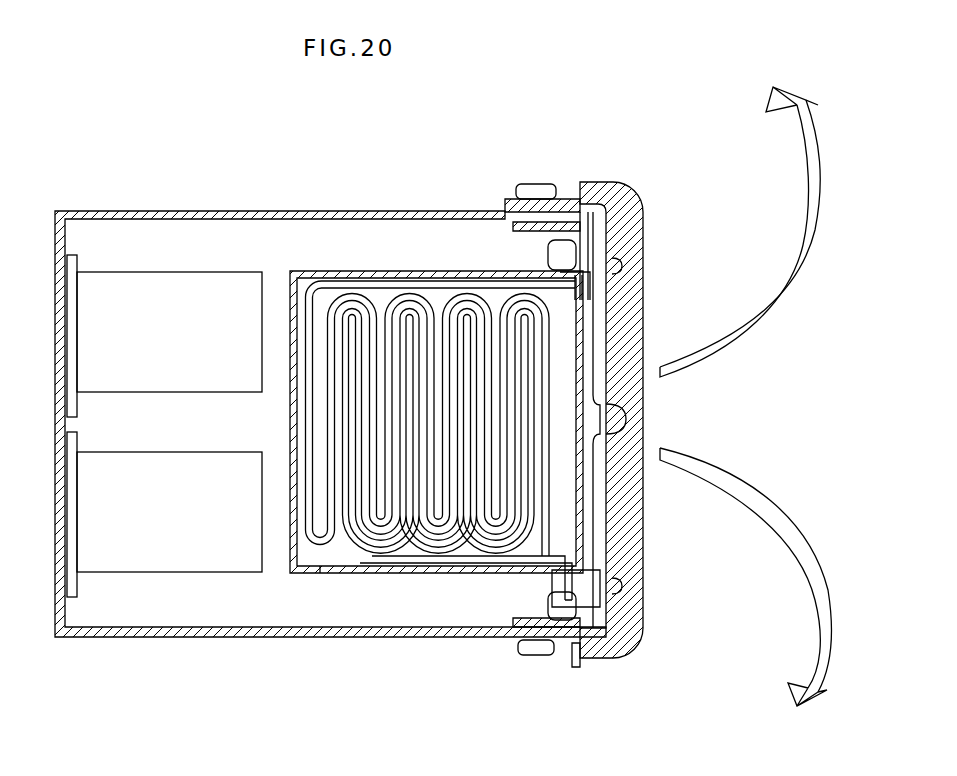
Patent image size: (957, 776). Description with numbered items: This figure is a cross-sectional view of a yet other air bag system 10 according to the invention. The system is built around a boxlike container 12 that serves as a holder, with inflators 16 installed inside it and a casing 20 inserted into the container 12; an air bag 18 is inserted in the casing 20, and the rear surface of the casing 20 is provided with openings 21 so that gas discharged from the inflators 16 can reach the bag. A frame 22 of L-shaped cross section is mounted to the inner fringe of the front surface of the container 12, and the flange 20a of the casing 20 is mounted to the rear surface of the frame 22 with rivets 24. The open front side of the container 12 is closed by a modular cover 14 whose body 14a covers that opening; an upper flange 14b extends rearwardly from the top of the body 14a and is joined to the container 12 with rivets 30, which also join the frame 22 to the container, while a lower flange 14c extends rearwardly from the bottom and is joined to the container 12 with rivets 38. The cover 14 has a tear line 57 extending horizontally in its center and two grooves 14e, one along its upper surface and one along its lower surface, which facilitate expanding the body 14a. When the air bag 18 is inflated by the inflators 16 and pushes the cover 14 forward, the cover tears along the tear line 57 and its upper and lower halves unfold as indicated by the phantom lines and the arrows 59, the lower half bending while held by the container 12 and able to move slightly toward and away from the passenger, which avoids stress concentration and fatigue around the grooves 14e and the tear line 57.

The air bag system 10 is at (652, 166).
The container 12 is at (285, 638).
The modular cover 14 is at (573, 407).
The body 14a is at (642, 488).
The upper flange 14b is at (565, 185).
The lower flange 14c is at (525, 652).
The grooves 14e is at (630, 270).
The inflators 16 is at (192, 272).
The air bag 18 is at (327, 575).
The casing 20 is at (360, 574).
The flange 20a is at (548, 270).
The openings 21 is at (296, 312).
The frame 22 is at (632, 200).
The rivets 24 is at (620, 256).
The rivets 30 is at (536, 184).
The rivets 38 is at (575, 655).
The tear line 57 is at (628, 432).
The arrows 59 is at (793, 270).